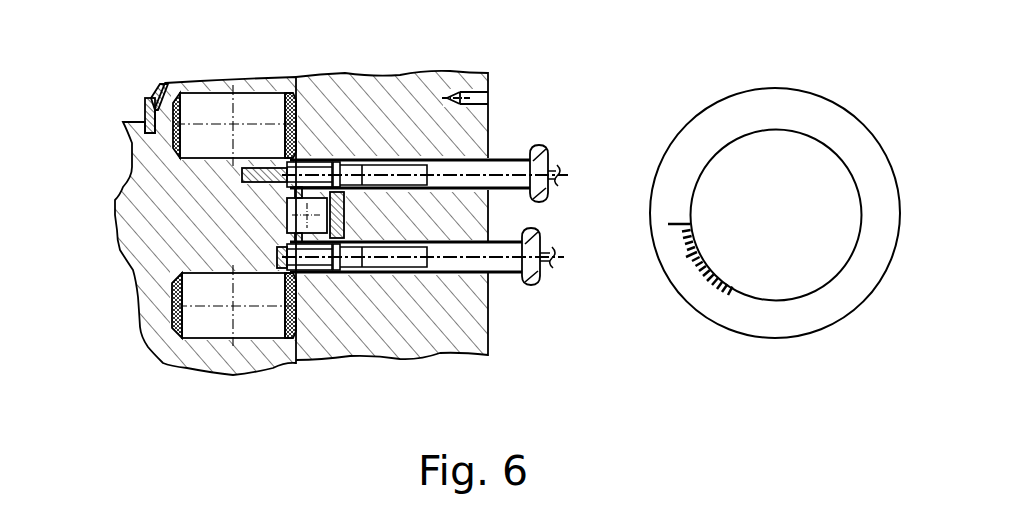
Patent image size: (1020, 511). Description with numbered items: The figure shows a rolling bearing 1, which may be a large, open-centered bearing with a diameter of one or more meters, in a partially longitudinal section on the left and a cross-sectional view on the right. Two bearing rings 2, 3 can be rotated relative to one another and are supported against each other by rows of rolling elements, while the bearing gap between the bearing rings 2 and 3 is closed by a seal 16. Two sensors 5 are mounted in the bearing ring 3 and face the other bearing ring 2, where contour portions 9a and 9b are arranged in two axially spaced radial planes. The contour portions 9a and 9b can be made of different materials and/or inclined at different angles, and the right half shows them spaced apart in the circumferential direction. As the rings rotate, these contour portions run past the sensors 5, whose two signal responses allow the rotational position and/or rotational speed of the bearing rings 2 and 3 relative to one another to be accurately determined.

The rolling bearing 1 is at (132, 64).
The bearing ring 2 is at (250, 363).
The bearing ring 3 is at (438, 342).
The sensor 5 is at (510, 165).
The contour portion 9a is at (265, 173).
The contour portion 9b is at (277, 252).
The seal 16 is at (144, 106).